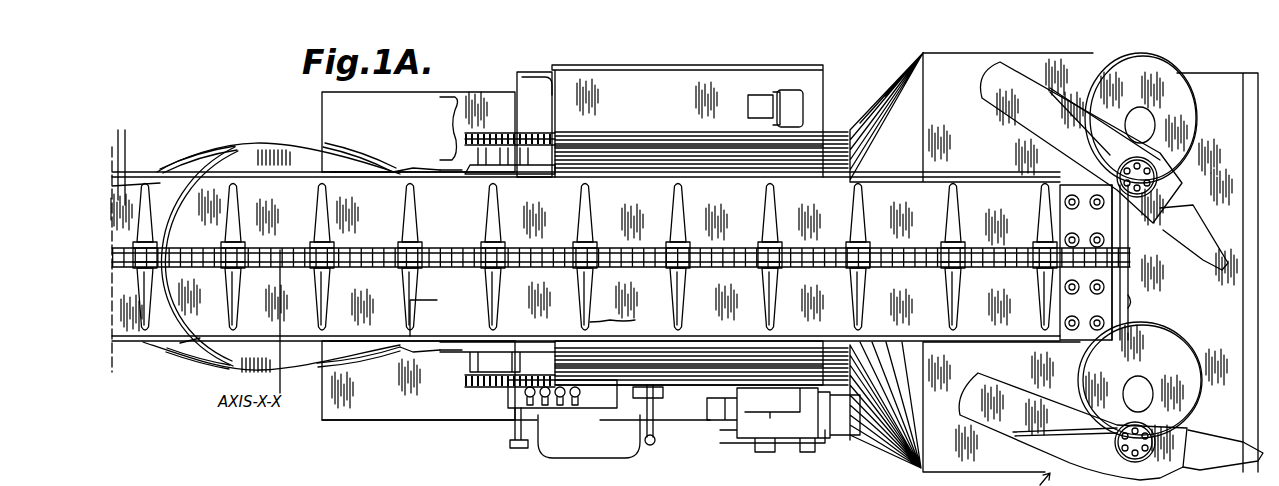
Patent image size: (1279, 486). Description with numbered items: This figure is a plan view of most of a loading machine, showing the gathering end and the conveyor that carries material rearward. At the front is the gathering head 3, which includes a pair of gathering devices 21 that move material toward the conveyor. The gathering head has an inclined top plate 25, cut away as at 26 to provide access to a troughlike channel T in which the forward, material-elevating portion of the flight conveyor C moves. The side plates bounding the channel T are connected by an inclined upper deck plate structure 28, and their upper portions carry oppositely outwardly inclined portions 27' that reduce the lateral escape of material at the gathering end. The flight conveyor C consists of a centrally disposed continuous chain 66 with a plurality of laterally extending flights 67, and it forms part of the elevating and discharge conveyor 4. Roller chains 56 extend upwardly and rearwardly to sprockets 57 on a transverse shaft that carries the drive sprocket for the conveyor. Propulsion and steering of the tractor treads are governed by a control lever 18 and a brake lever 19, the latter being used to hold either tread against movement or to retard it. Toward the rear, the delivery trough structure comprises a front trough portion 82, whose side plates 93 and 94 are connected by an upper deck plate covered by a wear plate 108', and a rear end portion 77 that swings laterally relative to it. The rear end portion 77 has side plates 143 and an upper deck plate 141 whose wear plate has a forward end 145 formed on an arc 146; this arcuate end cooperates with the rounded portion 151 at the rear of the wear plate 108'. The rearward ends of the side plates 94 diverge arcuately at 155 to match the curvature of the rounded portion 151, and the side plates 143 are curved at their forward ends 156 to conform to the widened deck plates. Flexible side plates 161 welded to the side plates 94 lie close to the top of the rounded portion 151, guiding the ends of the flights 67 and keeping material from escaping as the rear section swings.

The rear end portion 77 is at (118, 130).
The upper deck plate 141 is at (125, 205).
The side plates 143 is at (183, 160).
The forward end 145 is at (160, 195).
The curved forward ends 156 is at (200, 160).
The rounded portion 151 is at (262, 145).
The arcuately diverging rearward ends 155 is at (345, 165).
The side plate 94 is at (395, 170).
The side plate 93 is at (427, 172).
The front trough portion 82 is at (440, 97).
The sprockets 57 is at (475, 132).
The roller chains 56 is at (518, 132).
The upper deck plate structure 28 is at (617, 202).
The outwardly inclined portions 27' is at (689, 280).
The flight conveyor C is at (728, 248).
The continuous chain 66 is at (827, 247).
The flights 67 is at (626, 319).
The flexible side plates 161 is at (370, 180).
The wear plate 108' is at (394, 339).
The arc 146 is at (180, 343).
The elevating and discharge conveyor 4 is at (923, 253).
The troughlike channel T is at (1022, 203).
The gathering head 3 is at (1176, 83).
The inclined top plate 25 is at (1230, 90).
The gathering devices 21 is at (1213, 236).
The cut-away 26 is at (1128, 302).
The brake lever 19 is at (523, 448).
The control lever 18 is at (653, 432).